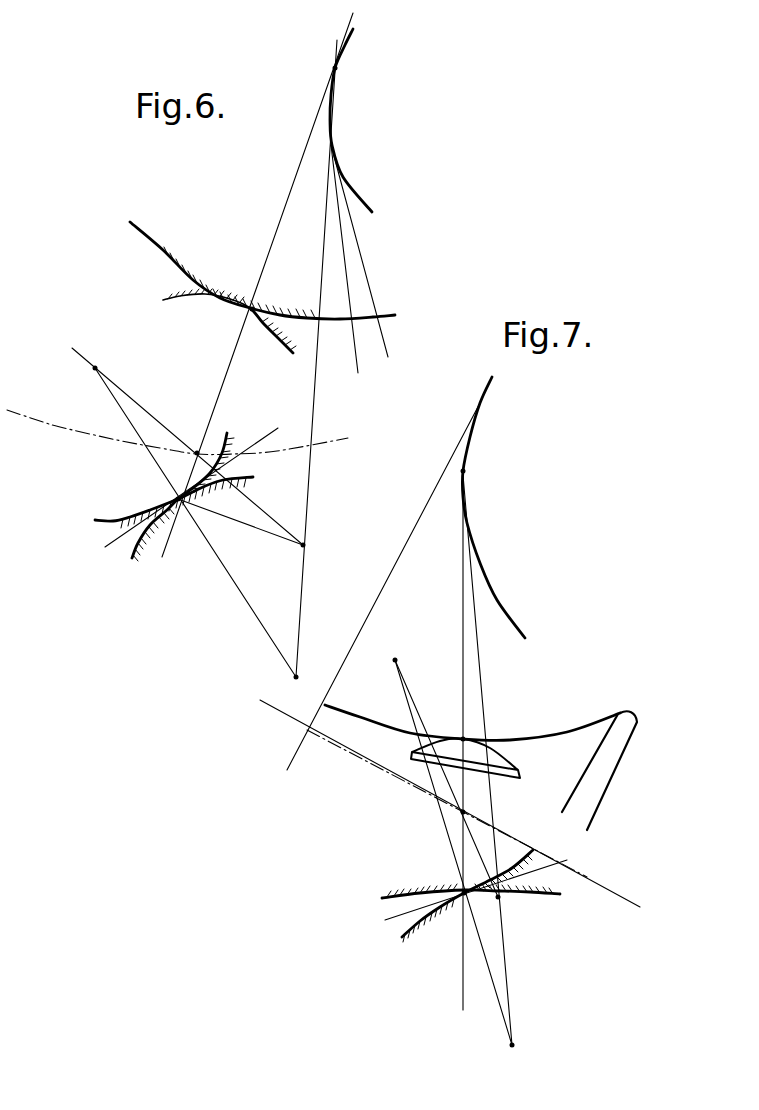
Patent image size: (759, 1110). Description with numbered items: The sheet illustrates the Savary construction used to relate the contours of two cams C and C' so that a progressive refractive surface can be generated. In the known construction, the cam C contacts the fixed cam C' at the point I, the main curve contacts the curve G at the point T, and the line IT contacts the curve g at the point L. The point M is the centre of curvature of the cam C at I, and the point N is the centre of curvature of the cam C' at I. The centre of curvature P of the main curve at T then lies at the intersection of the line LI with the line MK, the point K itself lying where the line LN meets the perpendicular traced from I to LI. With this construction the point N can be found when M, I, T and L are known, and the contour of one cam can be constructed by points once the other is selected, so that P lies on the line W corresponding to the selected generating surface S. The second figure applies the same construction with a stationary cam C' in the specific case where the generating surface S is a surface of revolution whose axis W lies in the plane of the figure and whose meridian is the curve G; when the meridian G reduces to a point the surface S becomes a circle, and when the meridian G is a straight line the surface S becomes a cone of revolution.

In FIG. 6, the contact point of IT with g L is at (334, 76).
In FIG. 7, the contact point of IT with g L is at (468, 469).
In FIG. 6, the curve g is at (353, 175).
In FIG. 7, the curve g is at (493, 587).
In FIG. 6, the meridian G is at (190, 265).
In FIG. 7, the meridian G is at (570, 726).
In FIG. 6, the contact point of γ with G T is at (241, 318).
In FIG. 7, the contact point of γ with G T is at (456, 730).
In FIG. 6, the centre of curvature of C at I M is at (105, 359).
In FIG. 7, the centre of curvature of C at I M is at (401, 652).
In FIG. 6, the line corresponding to the generating surface W is at (26, 411).
In FIG. 7, the line corresponding to the generating surface W is at (356, 757).
In FIG. 6, the centre of curvature of γ at T P is at (192, 440).
In FIG. 7, the centre of curvature of γ at T P is at (471, 804).
In FIG. 6, the contact point of C with C' I is at (176, 499).
In FIG. 7, the contact point of C with C' I is at (468, 882).
In FIG. 6, the cam C is at (165, 502).
In FIG. 7, the cam C is at (471, 880).
In FIG. 6, the fixed cam C' is at (159, 503).
In FIG. 7, the fixed cam C' is at (482, 896).
In FIG. 6, the intersection point of LN with the perpendicular from I to LI K is at (313, 544).
In FIG. 7, the intersection point of LN with the perpendicular from I to LI K is at (500, 898).
In FIG. 6, the centre of curvature of C' at I N is at (306, 672).
In FIG. 7, the centre of curvature of C' at I N is at (522, 1046).
In FIG. 7, the generating surface S is at (595, 770).